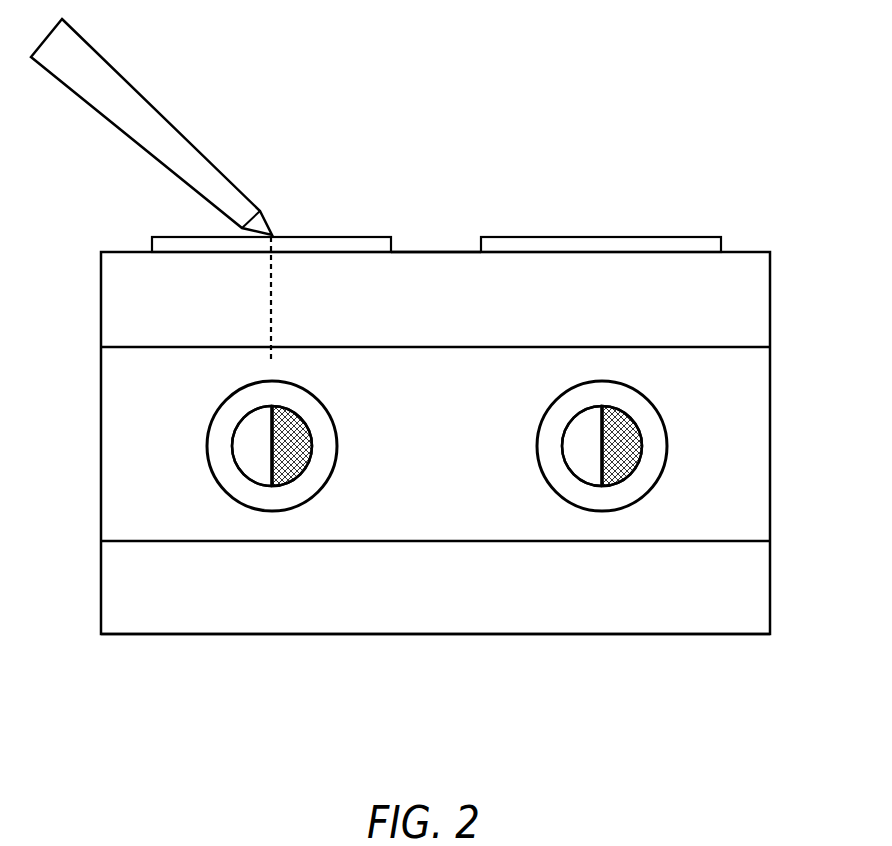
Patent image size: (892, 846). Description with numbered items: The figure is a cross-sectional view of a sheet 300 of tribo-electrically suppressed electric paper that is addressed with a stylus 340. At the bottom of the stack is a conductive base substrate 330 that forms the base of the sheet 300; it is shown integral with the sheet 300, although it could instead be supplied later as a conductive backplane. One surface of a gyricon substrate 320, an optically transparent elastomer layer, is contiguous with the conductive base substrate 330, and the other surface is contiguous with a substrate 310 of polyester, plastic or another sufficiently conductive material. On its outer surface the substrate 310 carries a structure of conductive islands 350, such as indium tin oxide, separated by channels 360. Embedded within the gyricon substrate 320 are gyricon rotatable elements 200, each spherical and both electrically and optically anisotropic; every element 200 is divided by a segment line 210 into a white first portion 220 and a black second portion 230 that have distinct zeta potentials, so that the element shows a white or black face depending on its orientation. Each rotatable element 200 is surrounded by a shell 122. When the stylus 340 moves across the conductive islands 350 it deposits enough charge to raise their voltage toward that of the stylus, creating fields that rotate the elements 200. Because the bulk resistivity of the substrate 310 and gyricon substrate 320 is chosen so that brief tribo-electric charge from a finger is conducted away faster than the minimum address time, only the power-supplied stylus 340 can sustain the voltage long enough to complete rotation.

The sheet 300 is at (573, 92).
The substrate 310 is at (770, 293).
The gyricon substrate 320 is at (770, 440).
The conductive base substrate 330 is at (770, 582).
The stylus 340 is at (147, 100).
The conductive islands 350 is at (330, 237).
The channels 360 is at (434, 250).
The outer shell of microcapsule 122 is at (328, 440).
The gyricon rotatable element 200 is at (238, 472).
The segment line 210 is at (267, 453).
The first portion 220 is at (255, 415).
The second portion 230 is at (289, 408).